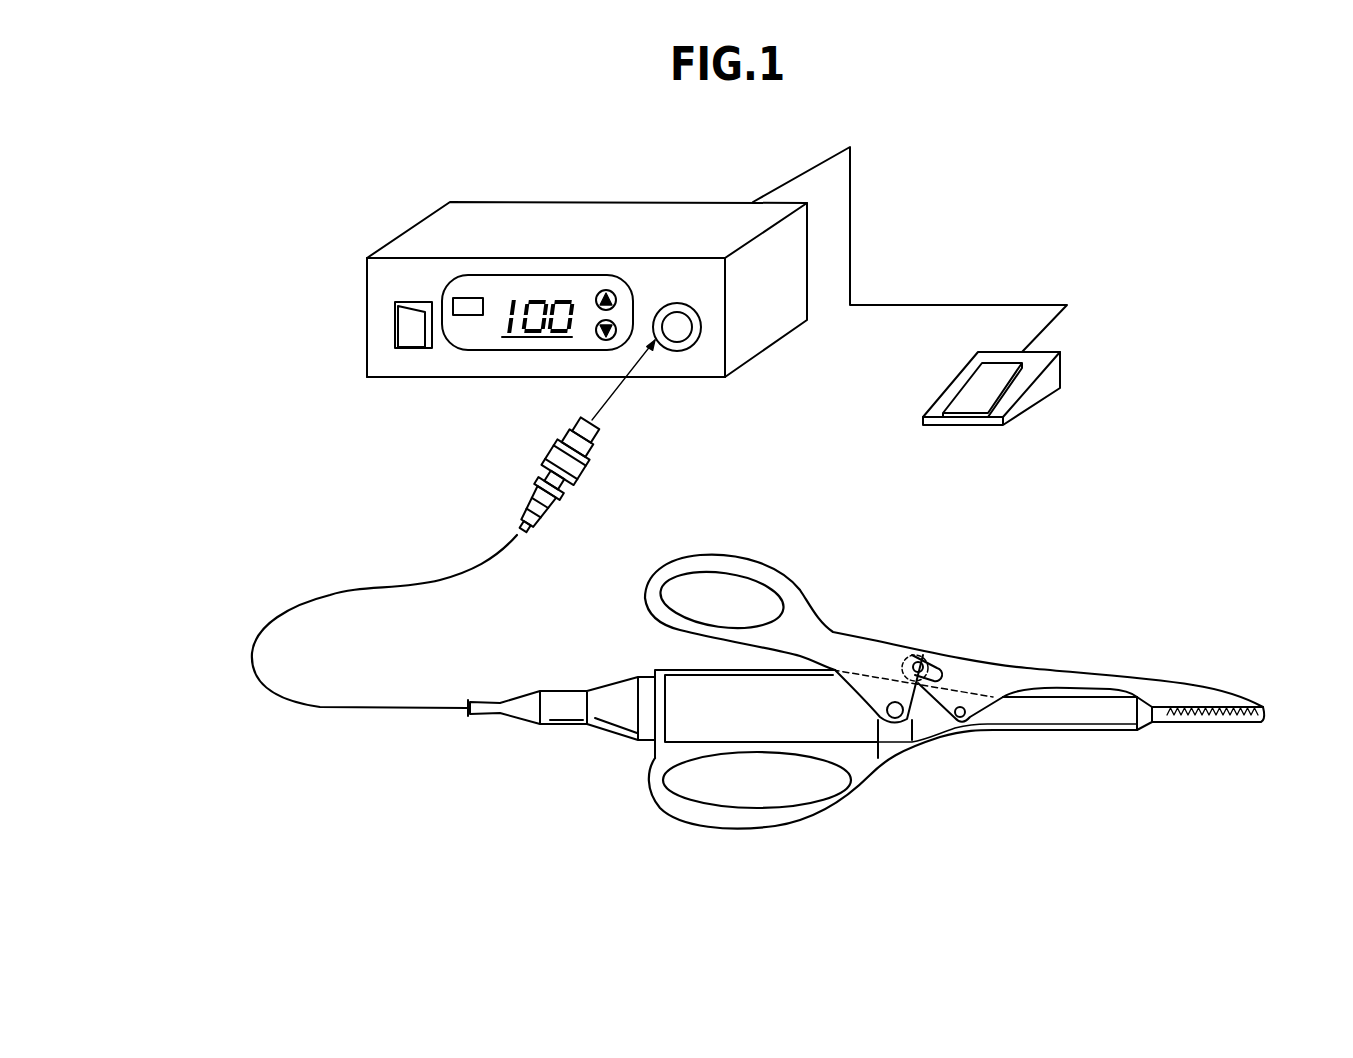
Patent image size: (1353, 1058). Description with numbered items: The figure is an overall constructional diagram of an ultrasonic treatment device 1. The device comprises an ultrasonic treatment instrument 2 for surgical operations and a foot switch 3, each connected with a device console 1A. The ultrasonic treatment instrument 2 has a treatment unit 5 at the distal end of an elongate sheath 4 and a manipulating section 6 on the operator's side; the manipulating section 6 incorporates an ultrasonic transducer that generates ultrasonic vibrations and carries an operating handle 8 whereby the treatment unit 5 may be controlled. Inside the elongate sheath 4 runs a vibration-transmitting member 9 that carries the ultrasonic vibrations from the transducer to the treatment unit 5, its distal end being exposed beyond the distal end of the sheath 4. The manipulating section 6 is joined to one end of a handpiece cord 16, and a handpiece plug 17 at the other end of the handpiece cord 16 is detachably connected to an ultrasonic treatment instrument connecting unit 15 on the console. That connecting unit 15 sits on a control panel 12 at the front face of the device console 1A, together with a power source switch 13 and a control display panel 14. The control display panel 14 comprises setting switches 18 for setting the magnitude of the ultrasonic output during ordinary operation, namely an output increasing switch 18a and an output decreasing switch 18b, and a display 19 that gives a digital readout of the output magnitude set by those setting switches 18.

The ultrasonic treatment device 1 is at (268, 472).
The device console 1A is at (760, 330).
The control panel 12 is at (392, 272).
The control display panel 14 is at (508, 275).
The display 19 is at (506, 347).
The setting switches 18 is at (620, 280).
The output increasing switch 18a is at (605, 290).
The output decreasing switch 18b is at (603, 338).
The ultrasonic treatment instrument connecting unit 15 is at (680, 330).
The power source switch 13 is at (413, 350).
The foot switch 3 is at (1060, 368).
The handpiece plug 17 is at (580, 477).
The handpiece cord 16 is at (363, 707).
The ultrasonic treatment instrument 2 is at (1005, 617).
The operating handle 8 is at (845, 580).
The manipulating section 6 is at (745, 835).
The elongate sheath 4 is at (1030, 732).
The treatment unit 5 is at (1213, 701).
The vibration-transmitting member 9 is at (1210, 723).